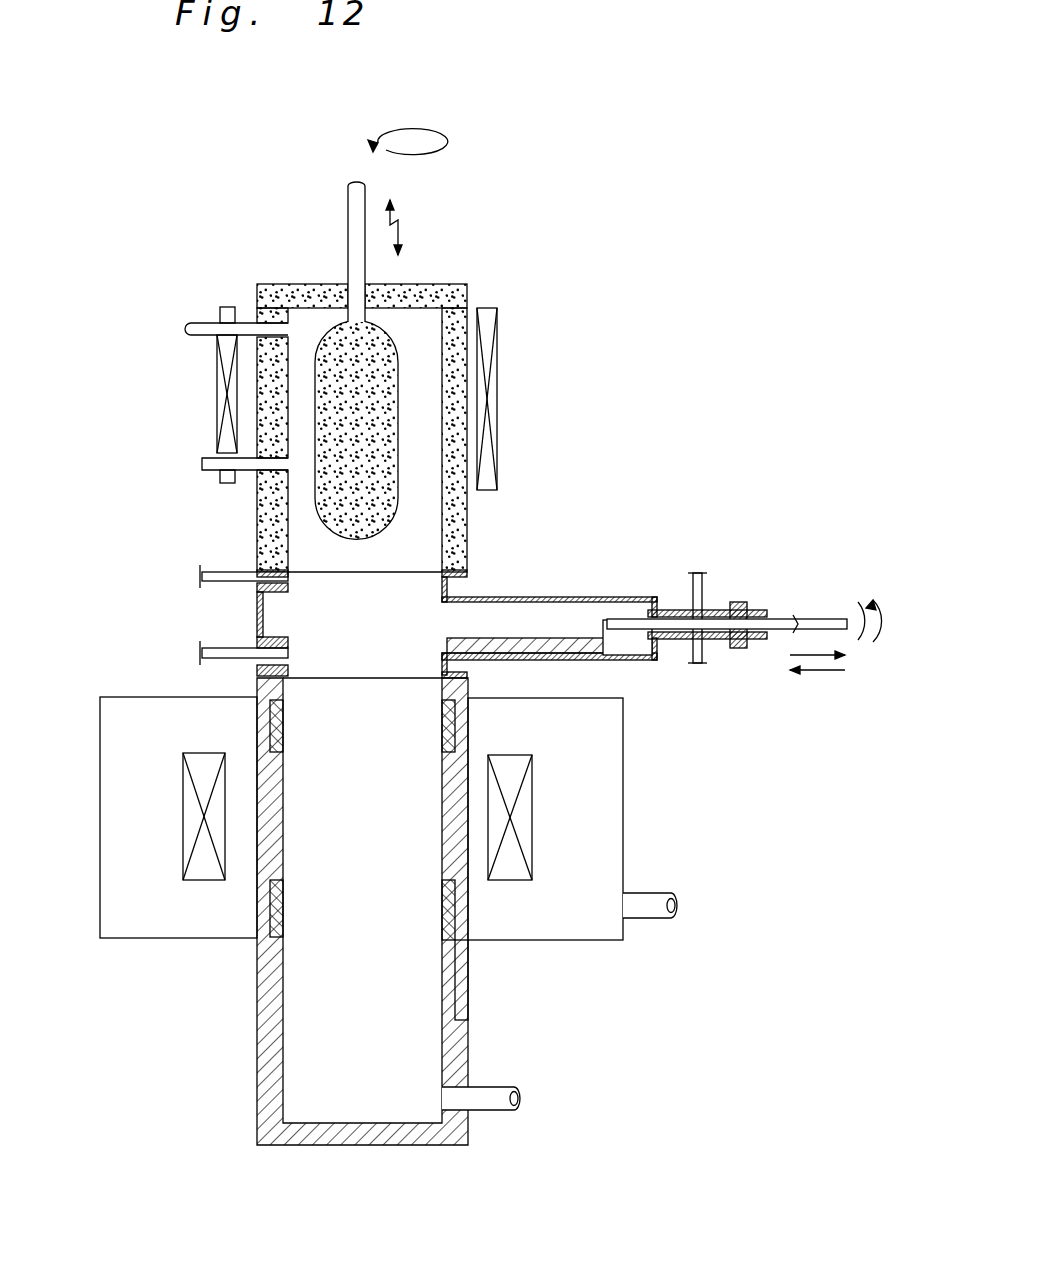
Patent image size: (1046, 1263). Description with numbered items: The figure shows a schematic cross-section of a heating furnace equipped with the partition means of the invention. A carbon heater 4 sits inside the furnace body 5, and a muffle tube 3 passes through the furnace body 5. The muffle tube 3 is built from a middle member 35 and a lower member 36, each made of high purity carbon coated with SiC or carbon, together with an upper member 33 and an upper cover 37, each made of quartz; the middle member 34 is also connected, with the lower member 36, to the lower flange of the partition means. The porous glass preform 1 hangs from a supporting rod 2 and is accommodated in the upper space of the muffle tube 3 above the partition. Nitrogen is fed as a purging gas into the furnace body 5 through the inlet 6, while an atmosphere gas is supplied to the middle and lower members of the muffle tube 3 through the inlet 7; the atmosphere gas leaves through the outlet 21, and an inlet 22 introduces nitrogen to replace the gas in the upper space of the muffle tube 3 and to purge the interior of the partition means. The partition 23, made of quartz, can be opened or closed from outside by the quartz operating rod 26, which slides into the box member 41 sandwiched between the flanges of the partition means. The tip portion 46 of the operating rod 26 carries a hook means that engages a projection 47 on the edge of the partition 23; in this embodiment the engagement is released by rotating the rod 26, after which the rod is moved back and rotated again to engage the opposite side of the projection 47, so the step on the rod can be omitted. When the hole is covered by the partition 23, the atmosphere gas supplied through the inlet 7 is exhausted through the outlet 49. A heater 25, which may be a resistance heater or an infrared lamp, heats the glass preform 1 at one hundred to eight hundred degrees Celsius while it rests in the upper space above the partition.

The porous glass preform 1 is at (372, 330).
The supporting rod 2 is at (360, 195).
The muffle tube 3 is at (262, 1022).
The carbon heater 4 is at (525, 825).
The furnace body 5 is at (623, 769).
The inlet 6 is at (655, 912).
The inlet 7 is at (500, 1100).
The outlet 21 is at (187, 329).
The inlet 22 is at (215, 462).
The partition 23 is at (520, 637).
The heater 25 is at (497, 435).
The operating rod 26 is at (777, 620).
The upper member 33 is at (455, 385).
The middle member 34 is at (457, 722).
The middle member 35 is at (262, 770).
The lower member 36 is at (457, 1022).
The upper cover 37 is at (467, 287).
The box member 41 is at (483, 592).
The tip portion 46 is at (607, 622).
The projection 47 is at (625, 628).
The outlet 49 is at (215, 652).